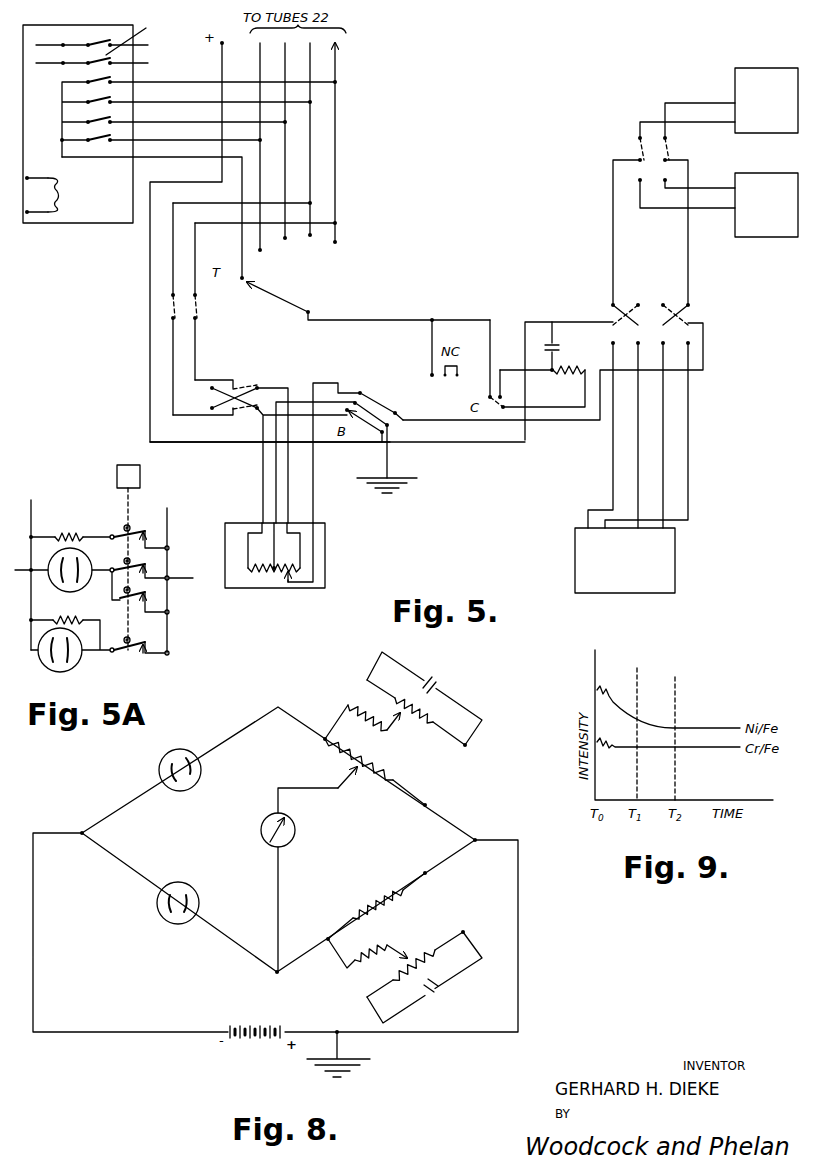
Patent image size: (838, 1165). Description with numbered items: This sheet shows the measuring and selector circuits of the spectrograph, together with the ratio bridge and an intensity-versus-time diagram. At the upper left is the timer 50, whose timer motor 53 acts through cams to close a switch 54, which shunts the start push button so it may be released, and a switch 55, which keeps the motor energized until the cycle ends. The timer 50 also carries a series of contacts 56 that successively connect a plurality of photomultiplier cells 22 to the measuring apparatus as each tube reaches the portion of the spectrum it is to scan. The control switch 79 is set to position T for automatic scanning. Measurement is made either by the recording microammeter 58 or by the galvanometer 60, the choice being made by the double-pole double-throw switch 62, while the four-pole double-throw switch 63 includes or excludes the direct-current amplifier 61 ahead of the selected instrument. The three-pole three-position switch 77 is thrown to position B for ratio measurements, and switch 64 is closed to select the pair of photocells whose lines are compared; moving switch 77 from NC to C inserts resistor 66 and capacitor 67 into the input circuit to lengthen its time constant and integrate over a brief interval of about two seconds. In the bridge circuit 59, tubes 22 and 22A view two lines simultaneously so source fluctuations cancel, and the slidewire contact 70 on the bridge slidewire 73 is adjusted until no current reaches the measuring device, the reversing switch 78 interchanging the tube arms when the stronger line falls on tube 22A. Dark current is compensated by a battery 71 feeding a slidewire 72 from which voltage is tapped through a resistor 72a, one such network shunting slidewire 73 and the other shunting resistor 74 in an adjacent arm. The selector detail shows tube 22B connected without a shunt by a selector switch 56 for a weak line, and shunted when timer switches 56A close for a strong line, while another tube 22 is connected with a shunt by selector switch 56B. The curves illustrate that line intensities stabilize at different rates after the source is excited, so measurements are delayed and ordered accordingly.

In FIG. 5, the photomultiplier cell 22 is at (297, 147).
In FIG. 5A, the photomultiplier cell 22 is at (76, 665).
In FIG. 8, the photomultiplier cell 22 is at (197, 787).
In FIG. 8, the tube 22A is at (199, 888).
In FIG. 5A, the tube for scanning the weak line 22B is at (68, 592).
In FIG. 5, the timer 50 is at (91, 249).
In FIG. 5A, the timer 50 is at (128, 476).
In FIG. 5, the timer motor 53 is at (60, 196).
In FIG. 5, the switch 54 is at (136, 37).
In FIG. 5, the switch 55 is at (104, 37).
In FIG. 5, the contacts 56 is at (92, 139).
In FIG. 5A, the contacts 56 is at (147, 597).
In FIG. 5A, the timer switches 56A is at (140, 537).
In FIG. 5A, the selector switch 56B is at (128, 652).
In FIG. 5, the recording microammeter 58 is at (778, 248).
In FIG. 5, the ratio bridge 59 is at (325, 555).
In FIG. 8, the ratio bridge 59 is at (300, 766).
In FIG. 5, the galvanometer 60 is at (732, 78).
In FIG. 8, the galvanometer 60 is at (295, 832).
In FIG. 5, the direct-current amplifier 61 is at (676, 549).
In FIG. 5, the double-pole double-throw switch 62 is at (636, 148).
In FIG. 5, the four-pole double-throw switch 63 is at (693, 314).
In FIG. 5, the switch 64 is at (200, 309).
In FIG. 5, the resistor 66 is at (562, 383).
In FIG. 5, the capacitor 67 is at (556, 345).
In FIG. 5, the slidewire contact 70 is at (297, 590).
In FIG. 8, the slidewire contact 70 is at (349, 782).
In FIG. 8, the battery 71 is at (438, 688).
In FIG. 8, the slidewire 72 is at (414, 725).
In FIG. 8, the resistor 72a is at (356, 725).
In FIG. 8, the bridge slidewire 73 is at (388, 772).
In FIG. 8, the resistor 74 is at (368, 900).
In FIG. 5, the three-pole three-position switch 77 is at (393, 438).
In FIG. 5, the reversing switch 78 is at (236, 383).
In FIG. 5, the control switch 79 is at (285, 300).